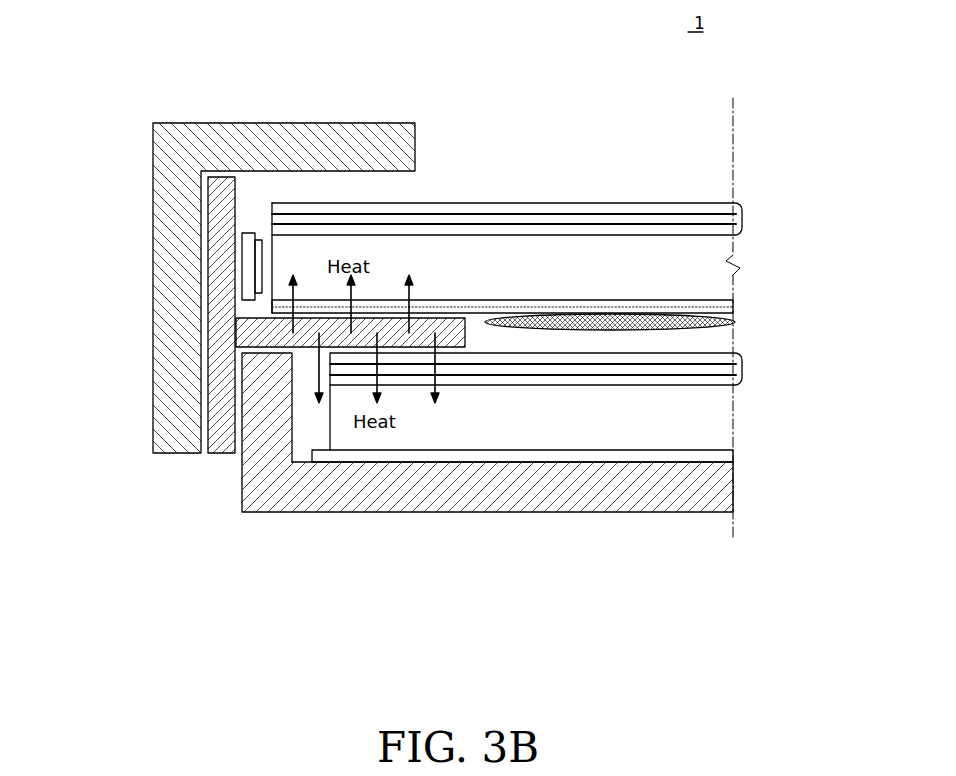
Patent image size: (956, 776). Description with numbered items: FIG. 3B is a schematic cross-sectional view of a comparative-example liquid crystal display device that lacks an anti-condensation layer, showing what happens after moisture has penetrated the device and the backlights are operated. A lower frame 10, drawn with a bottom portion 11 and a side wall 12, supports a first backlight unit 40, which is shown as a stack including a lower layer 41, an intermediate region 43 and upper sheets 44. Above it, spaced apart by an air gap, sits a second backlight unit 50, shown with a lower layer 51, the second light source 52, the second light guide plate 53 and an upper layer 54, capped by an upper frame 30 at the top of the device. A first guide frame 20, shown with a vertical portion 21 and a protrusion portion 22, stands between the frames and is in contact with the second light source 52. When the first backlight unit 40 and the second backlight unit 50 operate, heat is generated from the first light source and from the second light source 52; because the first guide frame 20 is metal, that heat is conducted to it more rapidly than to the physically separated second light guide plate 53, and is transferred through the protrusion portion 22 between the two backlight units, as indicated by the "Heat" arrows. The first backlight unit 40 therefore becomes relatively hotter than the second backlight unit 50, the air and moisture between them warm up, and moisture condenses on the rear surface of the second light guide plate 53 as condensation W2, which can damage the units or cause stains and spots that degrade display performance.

The lower frame / bottom chassis 10 is at (718, 497).
The bottom portion of lower frame 11 is at (332, 483).
The side wall of lower frame 12 is at (265, 448).
The first guide frame 20 is at (93, 272).
The vertical heat dissipation plate 21 is at (222, 277).
The protrusion portion 22 is at (270, 323).
The upper frame / top chassis 30 is at (401, 143).
The first backlight unit 40 is at (805, 368).
The reflective sheet 41 is at (718, 458).
The light guide / air gap 43 is at (718, 424).
The optical sheets 44 is at (743, 375).
The second backlight unit 50 is at (803, 211).
The lower substrate / polarizer 51 is at (733, 305).
The second light source 52 is at (257, 260).
The second light guide plate 53 is at (718, 253).
The upper substrate 54 is at (743, 221).
The condensation W2 is at (735, 321).